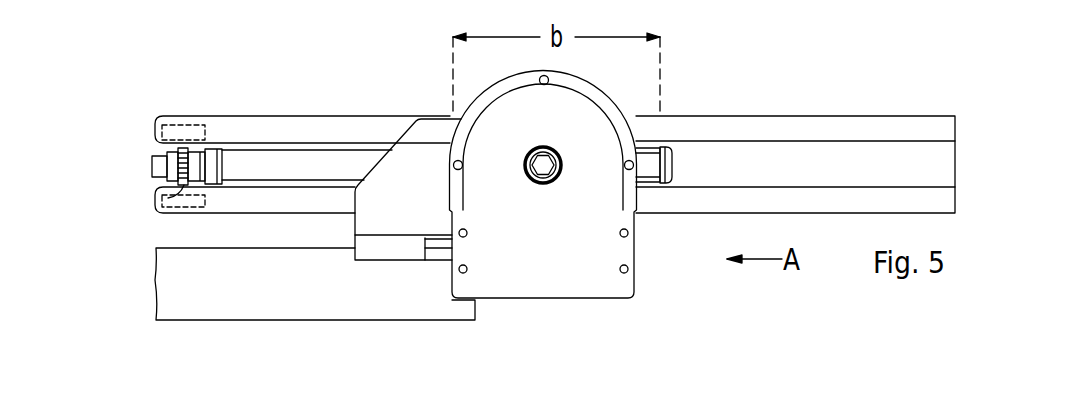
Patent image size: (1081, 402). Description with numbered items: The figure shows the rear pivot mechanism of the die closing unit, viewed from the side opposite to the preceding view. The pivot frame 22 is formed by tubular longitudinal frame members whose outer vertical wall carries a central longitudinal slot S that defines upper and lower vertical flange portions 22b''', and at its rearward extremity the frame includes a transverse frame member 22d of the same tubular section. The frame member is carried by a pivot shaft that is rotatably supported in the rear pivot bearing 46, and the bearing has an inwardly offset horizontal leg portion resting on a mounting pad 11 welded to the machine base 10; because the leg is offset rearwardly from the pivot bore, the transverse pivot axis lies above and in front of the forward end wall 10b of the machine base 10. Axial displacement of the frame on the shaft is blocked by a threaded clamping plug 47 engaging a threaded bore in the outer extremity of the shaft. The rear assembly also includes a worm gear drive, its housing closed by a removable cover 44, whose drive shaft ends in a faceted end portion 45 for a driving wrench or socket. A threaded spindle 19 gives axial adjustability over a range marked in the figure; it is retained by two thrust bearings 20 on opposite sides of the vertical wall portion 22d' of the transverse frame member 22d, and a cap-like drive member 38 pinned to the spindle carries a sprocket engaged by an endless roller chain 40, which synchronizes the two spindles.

The machine base 10 is at (248, 292).
The forward end wall of the machine base 10b is at (477, 315).
The mounting pad 11 is at (380, 248).
The spindle 19 is at (290, 165).
The thrust bearings 20 is at (220, 186).
The pivot frame 22 is at (777, 115).
The vertical flange portions of longitudinal frame member 22b''' is at (1001, 123).
The transverse frame member 22d is at (135, 119).
The vertical wall portion of transverse frame member 22d' is at (198, 132).
The drive member 38 is at (150, 172).
The endless roller chain 40 is at (172, 200).
The removable cover 44 is at (588, 270).
The faceted end portion 45 is at (437, 255).
The rear pivot bearing 46 is at (405, 173).
The threaded clamping plug 47 is at (550, 160).
The longitudinal slot S is at (267, 183).